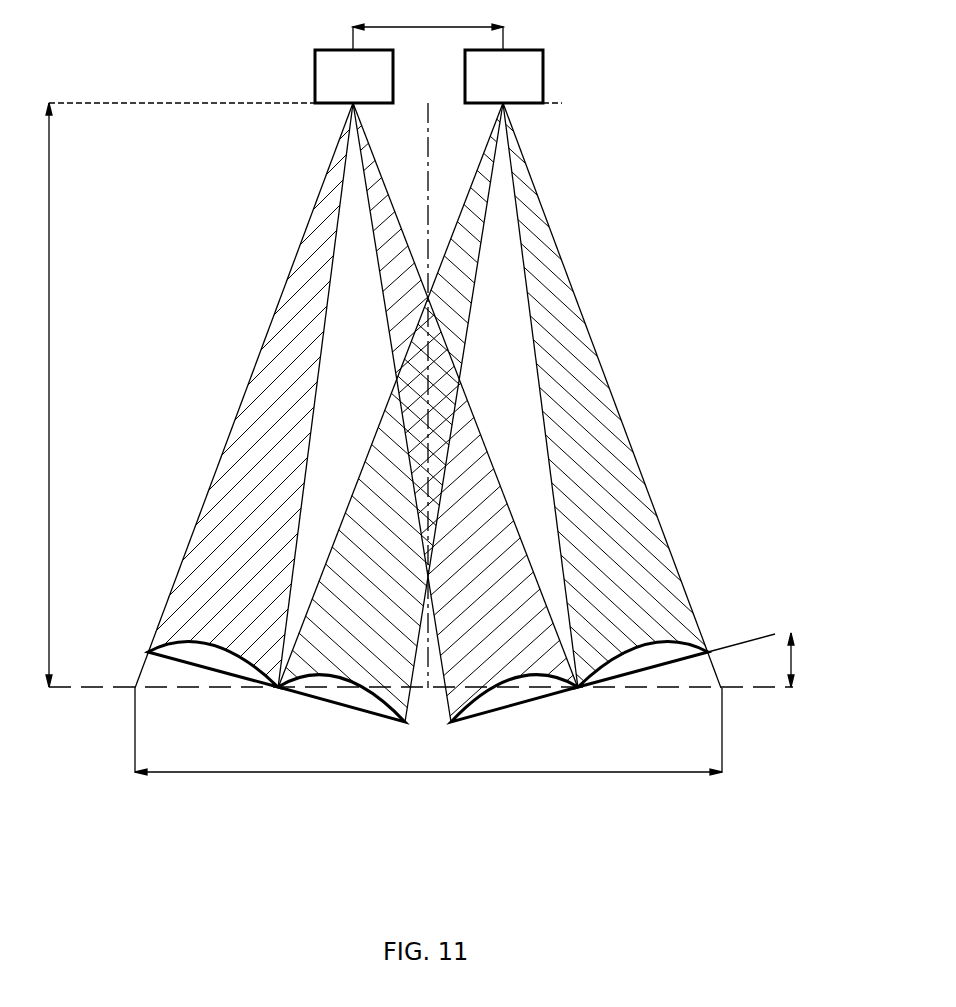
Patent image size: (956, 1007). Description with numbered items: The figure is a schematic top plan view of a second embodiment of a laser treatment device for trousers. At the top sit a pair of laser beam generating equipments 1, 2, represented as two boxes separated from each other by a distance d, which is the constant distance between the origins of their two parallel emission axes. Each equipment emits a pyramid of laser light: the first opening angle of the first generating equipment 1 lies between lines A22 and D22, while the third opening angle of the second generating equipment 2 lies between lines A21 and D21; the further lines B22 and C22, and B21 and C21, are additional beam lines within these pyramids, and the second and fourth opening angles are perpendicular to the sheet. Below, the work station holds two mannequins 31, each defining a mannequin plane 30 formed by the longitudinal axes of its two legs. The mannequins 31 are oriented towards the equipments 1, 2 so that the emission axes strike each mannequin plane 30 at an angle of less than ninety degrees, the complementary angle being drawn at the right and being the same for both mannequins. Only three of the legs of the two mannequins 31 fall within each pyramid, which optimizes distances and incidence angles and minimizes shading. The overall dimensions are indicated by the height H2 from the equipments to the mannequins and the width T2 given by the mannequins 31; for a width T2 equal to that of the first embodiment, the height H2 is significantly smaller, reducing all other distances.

The first laser beam generating equipment 1 is at (510, 73).
The second laser beam generating equipment 2 is at (333, 80).
The mannequin plane 30 is at (720, 650).
The mannequin 31 is at (327, 702).
The line A21 is at (308, 224).
The line B21 is at (331, 271).
The line C21 is at (385, 300).
The line D21 is at (386, 196).
The line A22 is at (530, 167).
The line B22 is at (550, 226).
The line C22 is at (470, 315).
The line D22 is at (459, 217).
The distance between generating equipments d is at (428, 25).
The height H2 is at (68, 395).
The width T2 is at (428, 748).